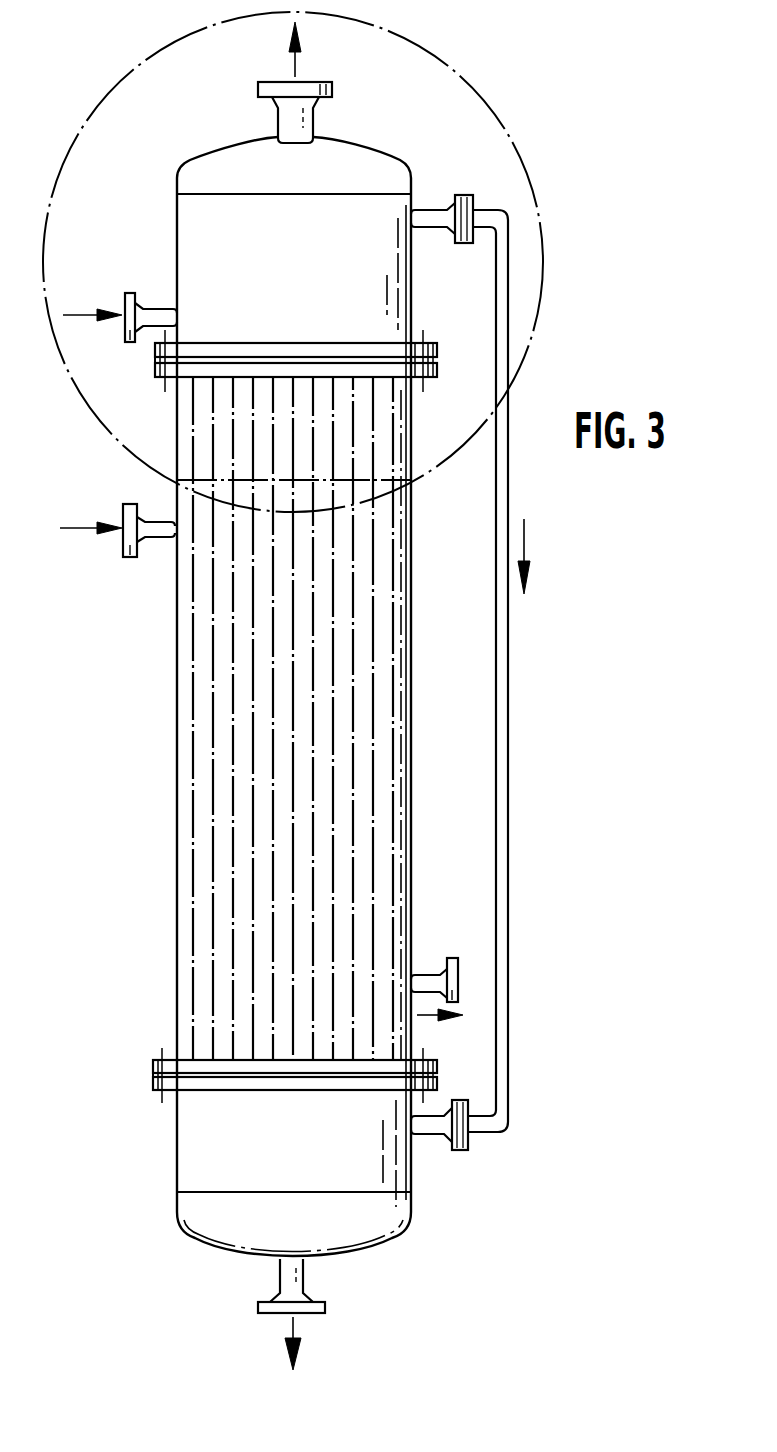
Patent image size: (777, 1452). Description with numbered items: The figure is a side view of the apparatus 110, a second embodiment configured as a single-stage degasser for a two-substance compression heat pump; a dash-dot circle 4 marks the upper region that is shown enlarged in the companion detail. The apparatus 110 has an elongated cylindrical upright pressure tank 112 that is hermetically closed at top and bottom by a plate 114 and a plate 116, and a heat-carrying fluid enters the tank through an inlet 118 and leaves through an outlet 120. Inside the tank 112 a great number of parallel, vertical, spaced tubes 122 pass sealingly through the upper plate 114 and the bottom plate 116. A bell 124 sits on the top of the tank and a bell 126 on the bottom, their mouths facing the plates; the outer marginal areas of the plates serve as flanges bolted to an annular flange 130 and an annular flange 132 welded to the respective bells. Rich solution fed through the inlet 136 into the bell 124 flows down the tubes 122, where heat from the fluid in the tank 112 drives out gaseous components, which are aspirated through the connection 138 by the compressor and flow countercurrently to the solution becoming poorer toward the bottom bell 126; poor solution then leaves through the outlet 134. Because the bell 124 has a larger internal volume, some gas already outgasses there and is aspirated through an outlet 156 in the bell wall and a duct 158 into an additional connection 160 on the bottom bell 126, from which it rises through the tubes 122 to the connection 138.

The detail region of FIG. 4 is at (515, 141).
The apparatus 110 is at (310, 696).
The pressure tank 112 is at (178, 915).
The plate 114 is at (155, 377).
The plate 116 is at (160, 1060).
The inlet 118 is at (155, 540).
The outlet 120 is at (423, 976).
The tubes 122 is at (233, 727).
The bell 124 is at (177, 211).
The bell 126 is at (173, 1178).
The annular flange 130 is at (157, 350).
The annular flange 132 is at (158, 1092).
The outlet 134 is at (280, 1278).
The inlet 136 is at (157, 308).
The connection 138 is at (317, 127).
The outlet 156 is at (432, 208).
The duct 158 is at (505, 815).
The additional connection 160 is at (423, 1137).